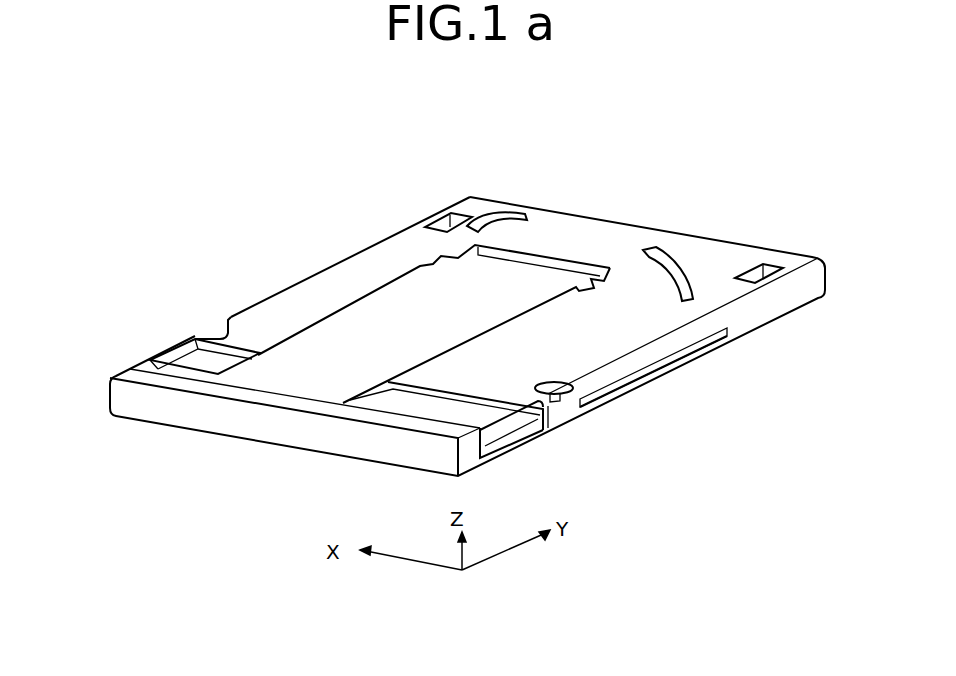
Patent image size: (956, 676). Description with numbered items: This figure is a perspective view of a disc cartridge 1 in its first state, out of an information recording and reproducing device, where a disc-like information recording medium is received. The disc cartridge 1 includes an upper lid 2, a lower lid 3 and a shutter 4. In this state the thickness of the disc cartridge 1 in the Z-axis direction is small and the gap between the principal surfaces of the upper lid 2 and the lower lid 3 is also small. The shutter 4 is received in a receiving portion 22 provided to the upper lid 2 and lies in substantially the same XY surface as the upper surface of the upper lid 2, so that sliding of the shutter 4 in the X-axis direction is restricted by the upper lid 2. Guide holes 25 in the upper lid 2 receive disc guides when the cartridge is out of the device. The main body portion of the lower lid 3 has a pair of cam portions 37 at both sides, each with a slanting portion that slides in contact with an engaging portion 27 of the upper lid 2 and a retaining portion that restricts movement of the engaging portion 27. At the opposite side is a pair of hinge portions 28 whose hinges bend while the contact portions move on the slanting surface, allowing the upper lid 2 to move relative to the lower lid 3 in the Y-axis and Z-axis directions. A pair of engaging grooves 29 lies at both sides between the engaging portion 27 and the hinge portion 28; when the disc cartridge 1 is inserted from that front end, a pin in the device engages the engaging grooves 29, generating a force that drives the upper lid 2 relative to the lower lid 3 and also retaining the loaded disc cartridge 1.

The disc cartridge 1 is at (561, 203).
The upper lid 2 is at (683, 242).
The lower lid 3 is at (688, 360).
The shutter 4 is at (398, 320).
The receiving portion 22 is at (292, 337).
The guide holes 25 is at (503, 217).
The engaging portion 27 is at (445, 227).
The hinge portion 28 is at (508, 440).
The engaging groove 29 is at (216, 333).
The cam portion 37 is at (425, 215).